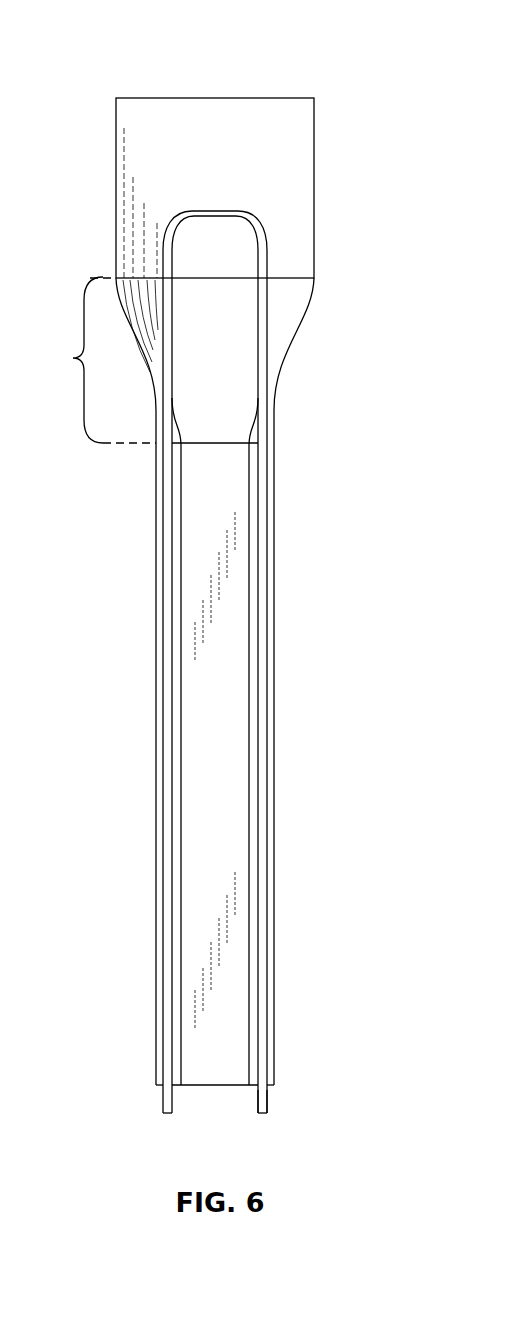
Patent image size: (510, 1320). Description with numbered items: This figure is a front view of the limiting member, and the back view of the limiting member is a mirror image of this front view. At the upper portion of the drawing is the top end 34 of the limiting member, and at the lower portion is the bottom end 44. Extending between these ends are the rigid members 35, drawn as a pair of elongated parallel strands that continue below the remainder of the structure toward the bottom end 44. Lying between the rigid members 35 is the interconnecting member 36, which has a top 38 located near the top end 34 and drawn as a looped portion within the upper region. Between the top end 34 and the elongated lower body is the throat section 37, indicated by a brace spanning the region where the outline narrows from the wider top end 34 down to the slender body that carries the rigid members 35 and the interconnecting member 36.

The top end 34 is at (152, 97).
The rigid members 35 is at (159, 570).
The interconnecting member 36 is at (216, 664).
The throat section 37 is at (72, 358).
The top 38 is at (205, 277).
The bottom end 44 is at (263, 1113).